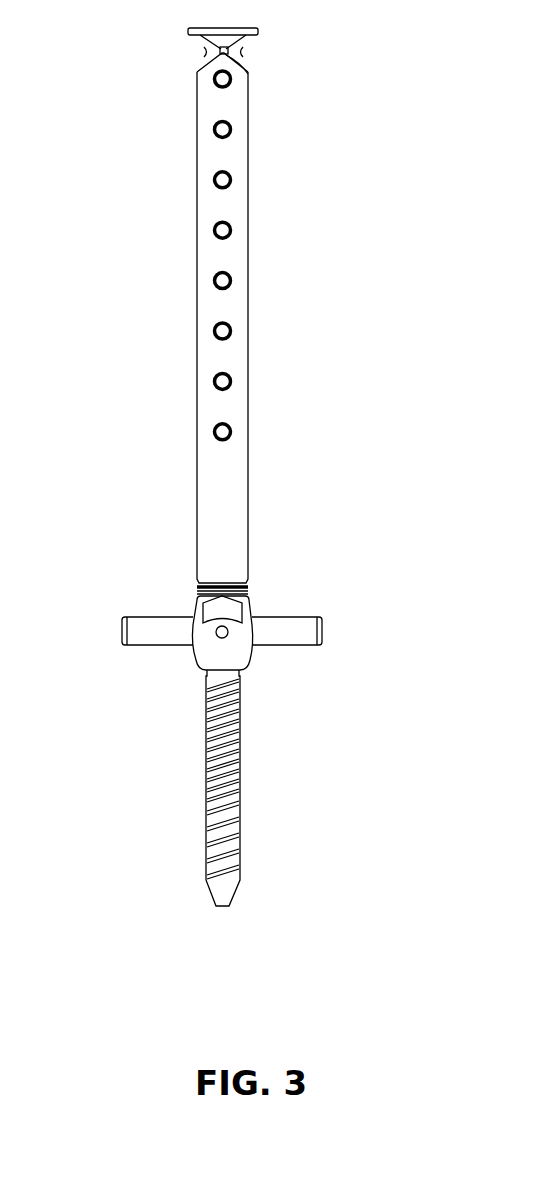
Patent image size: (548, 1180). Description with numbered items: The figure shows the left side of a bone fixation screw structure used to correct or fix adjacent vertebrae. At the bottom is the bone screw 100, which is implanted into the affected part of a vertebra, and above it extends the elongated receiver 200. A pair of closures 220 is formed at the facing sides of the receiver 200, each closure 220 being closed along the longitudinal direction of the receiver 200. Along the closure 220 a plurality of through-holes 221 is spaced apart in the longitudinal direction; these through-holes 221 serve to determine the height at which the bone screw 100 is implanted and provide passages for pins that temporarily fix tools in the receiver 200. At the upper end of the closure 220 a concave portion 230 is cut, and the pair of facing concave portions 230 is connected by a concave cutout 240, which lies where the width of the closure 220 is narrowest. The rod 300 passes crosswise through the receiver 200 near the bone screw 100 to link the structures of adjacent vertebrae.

The bone screw 100 is at (243, 745).
The receiver 200 is at (214, 311).
The closure 220 is at (232, 495).
The through-holes 221 is at (223, 331).
The concave portion 230 is at (203, 52).
The concave cutout 240 is at (248, 74).
The rod 300 is at (312, 632).